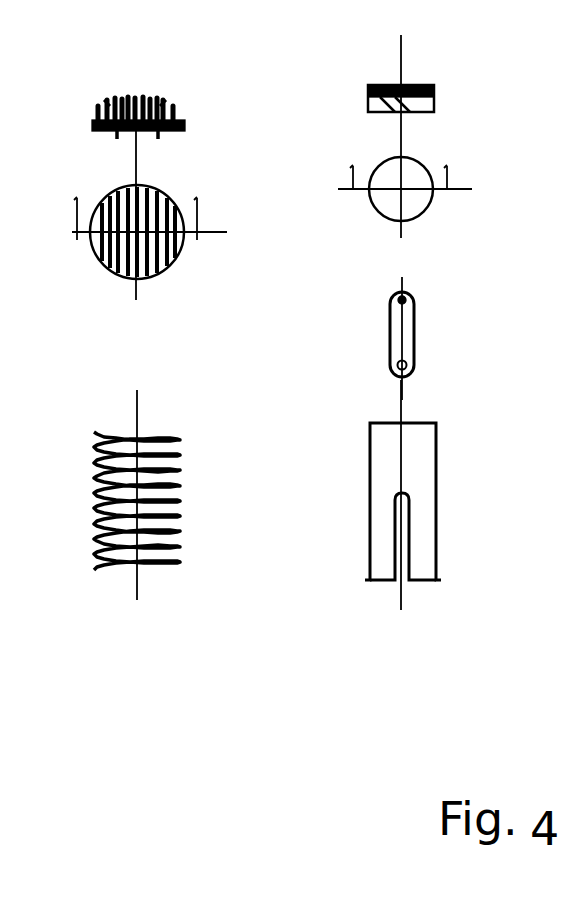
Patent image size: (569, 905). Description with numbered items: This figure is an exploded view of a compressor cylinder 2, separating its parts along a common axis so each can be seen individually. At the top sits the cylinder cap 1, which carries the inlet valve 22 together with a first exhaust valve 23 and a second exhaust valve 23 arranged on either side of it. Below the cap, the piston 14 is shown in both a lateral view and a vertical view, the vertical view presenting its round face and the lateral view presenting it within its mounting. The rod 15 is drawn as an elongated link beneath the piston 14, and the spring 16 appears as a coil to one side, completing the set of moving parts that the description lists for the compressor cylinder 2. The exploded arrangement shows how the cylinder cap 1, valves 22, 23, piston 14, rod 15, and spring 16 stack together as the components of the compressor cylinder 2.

The cylinder cap 1 is at (158, 203).
The compressor cylinder 2 is at (415, 463).
The piston 14 is at (418, 178).
The rod 15 is at (410, 333).
The spring 16 is at (155, 430).
The inlet valve 22 is at (136, 101).
The exhaust valve 23 is at (106, 100).